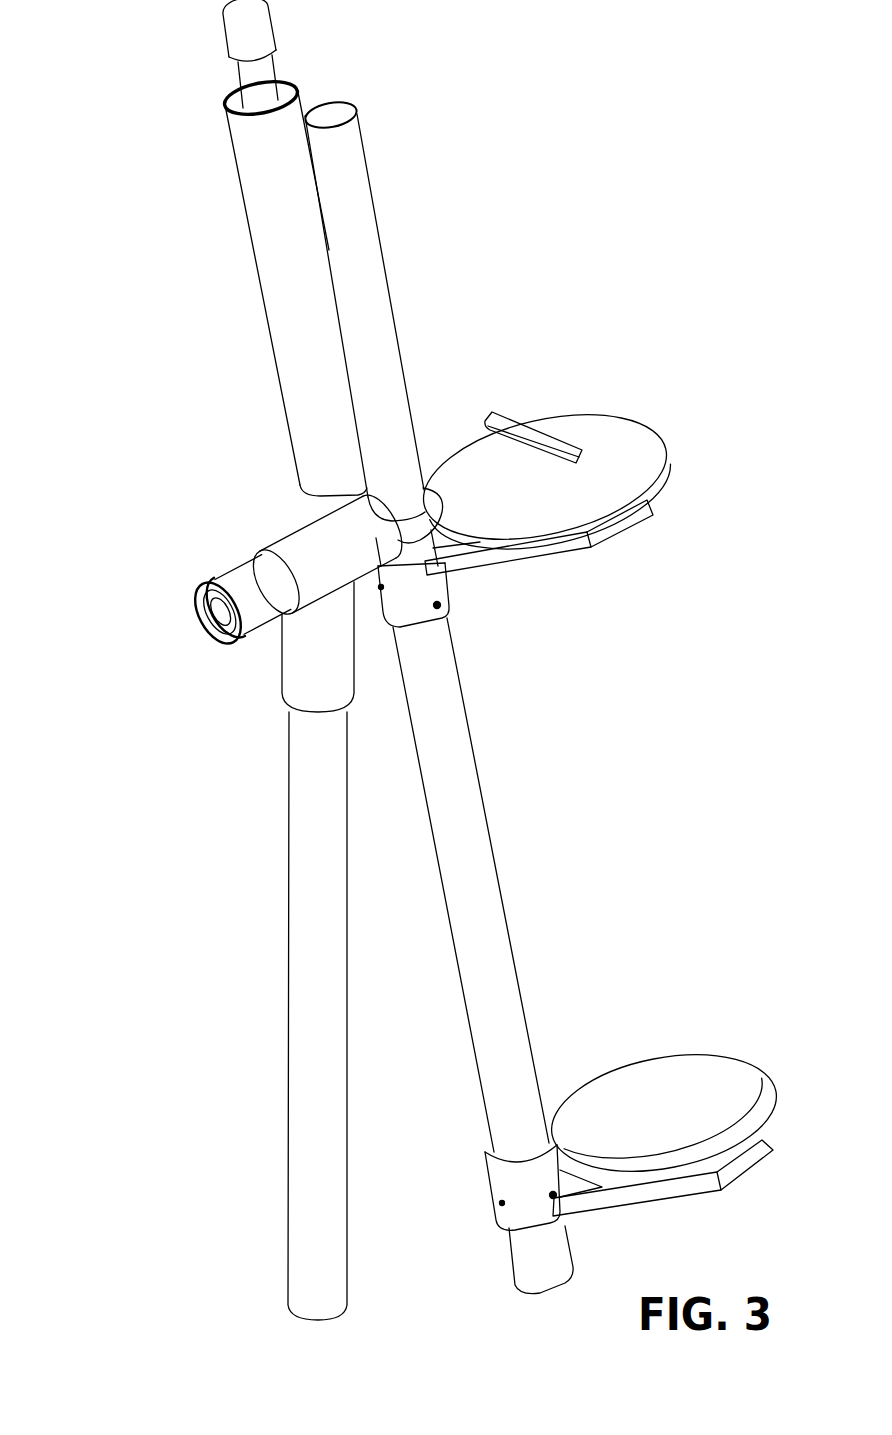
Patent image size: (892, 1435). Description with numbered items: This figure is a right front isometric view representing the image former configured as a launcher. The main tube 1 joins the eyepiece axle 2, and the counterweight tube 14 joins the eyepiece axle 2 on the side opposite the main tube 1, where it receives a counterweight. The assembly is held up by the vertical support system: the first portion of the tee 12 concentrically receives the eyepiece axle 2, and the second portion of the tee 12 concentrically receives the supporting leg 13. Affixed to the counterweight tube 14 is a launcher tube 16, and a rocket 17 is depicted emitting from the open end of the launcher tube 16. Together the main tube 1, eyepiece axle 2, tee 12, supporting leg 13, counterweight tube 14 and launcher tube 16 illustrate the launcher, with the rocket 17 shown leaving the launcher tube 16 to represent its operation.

The main tube 1 is at (507, 850).
The eyepiece axle 2 is at (278, 523).
The tee 12 is at (278, 655).
The supporting leg 13 is at (277, 881).
The counterweight tube 14 is at (380, 210).
The launcher tube 16 is at (252, 328).
The rocket 17 is at (215, 42).